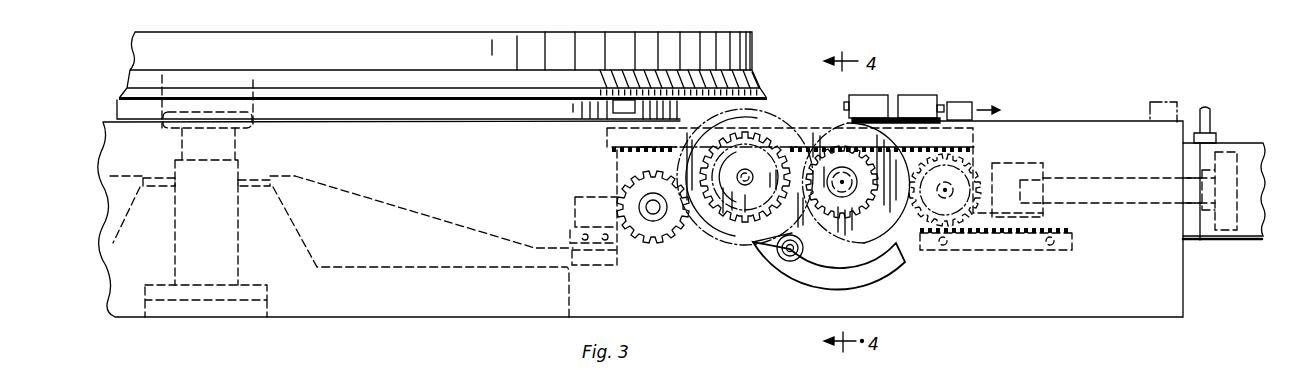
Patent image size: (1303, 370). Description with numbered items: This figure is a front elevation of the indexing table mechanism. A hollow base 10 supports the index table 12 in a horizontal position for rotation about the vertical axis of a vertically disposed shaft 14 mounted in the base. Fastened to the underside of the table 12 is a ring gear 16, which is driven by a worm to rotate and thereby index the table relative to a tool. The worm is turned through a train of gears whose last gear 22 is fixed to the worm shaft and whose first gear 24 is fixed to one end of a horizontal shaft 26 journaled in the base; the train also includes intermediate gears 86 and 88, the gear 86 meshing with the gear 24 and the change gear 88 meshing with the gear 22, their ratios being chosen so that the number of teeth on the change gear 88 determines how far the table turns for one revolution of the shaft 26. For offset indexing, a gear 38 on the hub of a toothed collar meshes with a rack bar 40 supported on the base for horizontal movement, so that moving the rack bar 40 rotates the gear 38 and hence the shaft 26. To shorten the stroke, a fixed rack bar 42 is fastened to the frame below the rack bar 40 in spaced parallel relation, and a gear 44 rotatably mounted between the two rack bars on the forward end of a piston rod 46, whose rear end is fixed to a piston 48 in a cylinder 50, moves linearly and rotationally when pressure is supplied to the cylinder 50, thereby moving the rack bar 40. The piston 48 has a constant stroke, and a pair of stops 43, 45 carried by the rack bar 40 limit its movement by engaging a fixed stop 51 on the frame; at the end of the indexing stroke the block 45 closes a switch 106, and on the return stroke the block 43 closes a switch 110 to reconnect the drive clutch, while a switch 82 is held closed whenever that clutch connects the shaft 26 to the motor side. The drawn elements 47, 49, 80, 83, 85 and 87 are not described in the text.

The hollow base 10 is at (372, 305).
The index table 12 is at (742, 31).
The vertically disposed shaft 14 is at (225, 260).
The ring gear 16 is at (590, 200).
The last gear 22 is at (658, 232).
The first gear 24 is at (852, 198).
The shaft 26 is at (841, 197).
The gear 38 is at (834, 266).
The rack bar 40 is at (993, 134).
The fixed rack bar 42 is at (1012, 245).
The stop 43 is at (631, 108).
The gear 44 is at (970, 172).
The stop 45 is at (958, 103).
The piston rod 46 is at (1073, 190).
The housing block 47 is at (880, 96).
The piston 48 is at (1228, 182).
The pin 49 is at (942, 104).
The cylinder 50 is at (1253, 240).
The fixed stop 51 is at (902, 121).
The cam 80 is at (915, 250).
The switch 82 is at (803, 236).
The slot 83 is at (834, 268).
The pivot 85 is at (787, 262).
The intermediate gear 86 is at (742, 212).
The gear 87 is at (746, 176).
The change gear 88 is at (722, 218).
The switch 106 is at (953, 97).
The switch 110 is at (845, 103).